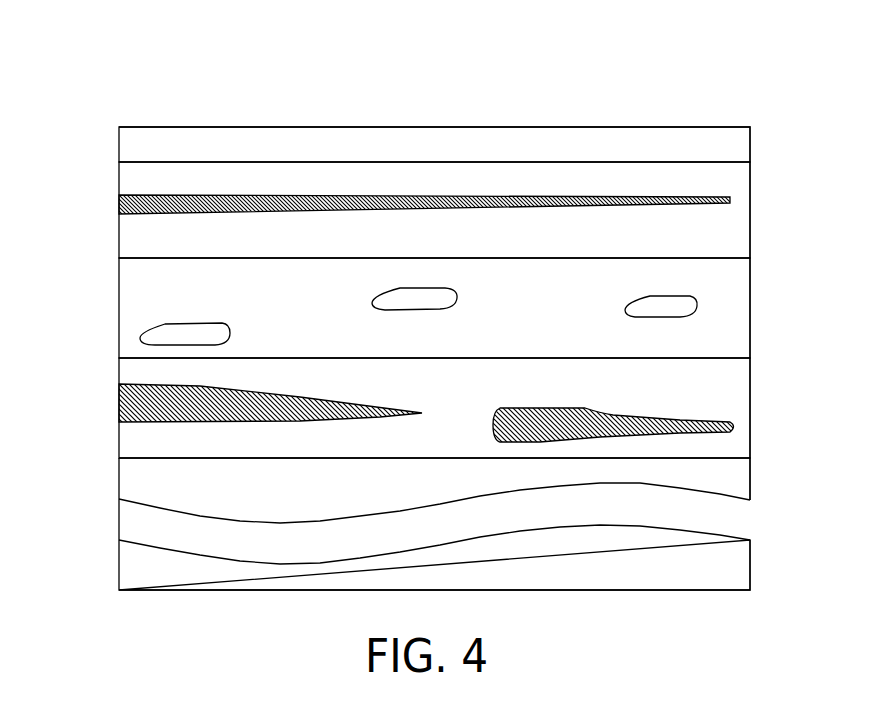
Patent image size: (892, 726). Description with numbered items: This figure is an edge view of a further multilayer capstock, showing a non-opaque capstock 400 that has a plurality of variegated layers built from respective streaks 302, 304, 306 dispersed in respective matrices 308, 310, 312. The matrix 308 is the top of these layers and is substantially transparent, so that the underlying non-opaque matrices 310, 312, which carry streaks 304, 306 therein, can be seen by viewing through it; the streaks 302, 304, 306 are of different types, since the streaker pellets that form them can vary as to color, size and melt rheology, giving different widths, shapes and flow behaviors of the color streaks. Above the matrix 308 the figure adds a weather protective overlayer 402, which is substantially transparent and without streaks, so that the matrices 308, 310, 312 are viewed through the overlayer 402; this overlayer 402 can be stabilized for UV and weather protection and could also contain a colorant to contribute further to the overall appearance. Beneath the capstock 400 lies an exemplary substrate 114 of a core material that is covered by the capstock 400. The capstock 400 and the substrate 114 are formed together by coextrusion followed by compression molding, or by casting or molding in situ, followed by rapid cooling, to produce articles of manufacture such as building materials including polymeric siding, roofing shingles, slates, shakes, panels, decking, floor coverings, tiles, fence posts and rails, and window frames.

The non-opaque capstock 400 is at (447, 128).
The weather protective overlayer 402 is at (145, 146).
The matrix 308 is at (145, 180).
The streaks 302 is at (204, 197).
The matrix 310 is at (130, 350).
The streaks 304 is at (165, 331).
The matrix 312 is at (138, 440).
The streaks 306 is at (138, 398).
The substrate 114 is at (110, 457).